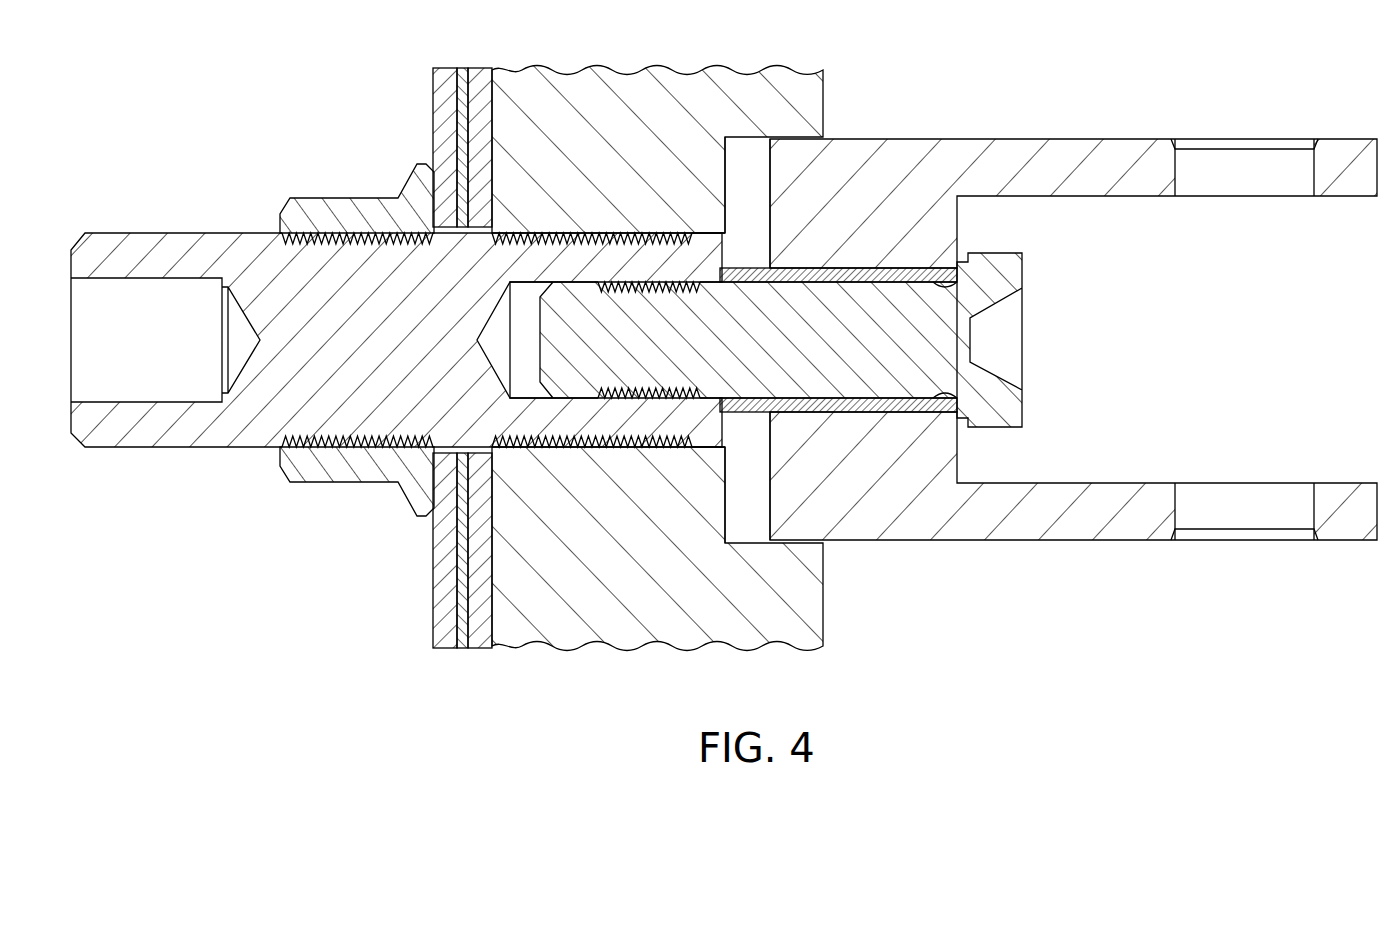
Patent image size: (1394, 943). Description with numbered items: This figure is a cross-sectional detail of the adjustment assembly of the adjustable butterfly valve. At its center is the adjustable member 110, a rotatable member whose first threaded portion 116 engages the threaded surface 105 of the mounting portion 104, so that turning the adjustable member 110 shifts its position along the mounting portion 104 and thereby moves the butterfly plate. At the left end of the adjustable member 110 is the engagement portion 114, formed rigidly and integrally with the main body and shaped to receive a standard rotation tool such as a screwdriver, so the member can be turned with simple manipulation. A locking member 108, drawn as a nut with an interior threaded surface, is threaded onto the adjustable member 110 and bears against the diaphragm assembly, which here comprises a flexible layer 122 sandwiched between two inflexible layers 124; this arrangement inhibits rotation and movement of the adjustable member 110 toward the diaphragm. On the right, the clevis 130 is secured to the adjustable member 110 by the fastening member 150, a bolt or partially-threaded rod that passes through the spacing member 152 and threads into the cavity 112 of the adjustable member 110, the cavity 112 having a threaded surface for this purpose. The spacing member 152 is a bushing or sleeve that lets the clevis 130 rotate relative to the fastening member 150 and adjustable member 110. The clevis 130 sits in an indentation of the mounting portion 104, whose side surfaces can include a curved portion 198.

The mounting portion 104 is at (635, 70).
The threaded surface 105 is at (618, 456).
The locking member 108 is at (321, 485).
The adjustable member 110 is at (154, 226).
The cavity 112 is at (527, 346).
The engagement portion 114 is at (90, 328).
The first threaded portion 116 is at (535, 447).
The flexible layer 122 is at (462, 122).
The inflexible layers 124 is at (437, 78).
The clevis 130 is at (1256, 518).
The fastening member 150 is at (1000, 428).
The spacing member 152 is at (855, 268).
The curved portion 198 is at (740, 136).